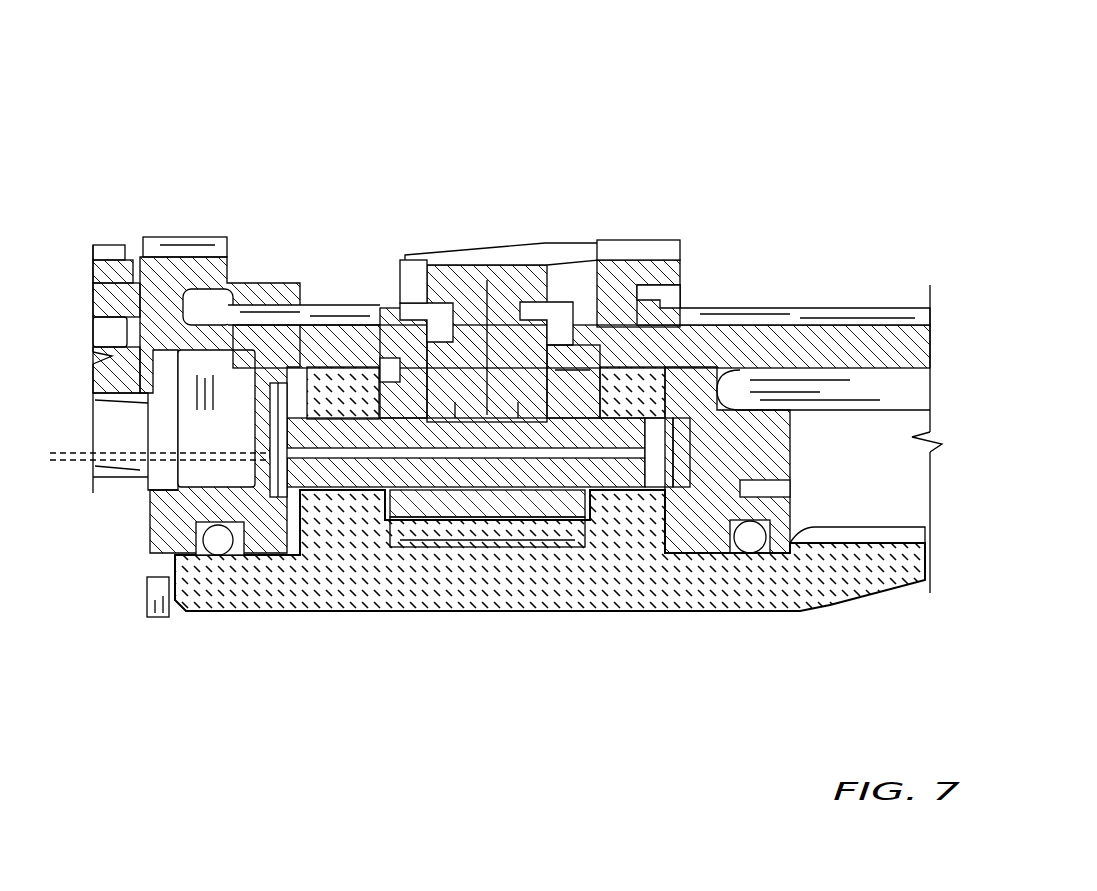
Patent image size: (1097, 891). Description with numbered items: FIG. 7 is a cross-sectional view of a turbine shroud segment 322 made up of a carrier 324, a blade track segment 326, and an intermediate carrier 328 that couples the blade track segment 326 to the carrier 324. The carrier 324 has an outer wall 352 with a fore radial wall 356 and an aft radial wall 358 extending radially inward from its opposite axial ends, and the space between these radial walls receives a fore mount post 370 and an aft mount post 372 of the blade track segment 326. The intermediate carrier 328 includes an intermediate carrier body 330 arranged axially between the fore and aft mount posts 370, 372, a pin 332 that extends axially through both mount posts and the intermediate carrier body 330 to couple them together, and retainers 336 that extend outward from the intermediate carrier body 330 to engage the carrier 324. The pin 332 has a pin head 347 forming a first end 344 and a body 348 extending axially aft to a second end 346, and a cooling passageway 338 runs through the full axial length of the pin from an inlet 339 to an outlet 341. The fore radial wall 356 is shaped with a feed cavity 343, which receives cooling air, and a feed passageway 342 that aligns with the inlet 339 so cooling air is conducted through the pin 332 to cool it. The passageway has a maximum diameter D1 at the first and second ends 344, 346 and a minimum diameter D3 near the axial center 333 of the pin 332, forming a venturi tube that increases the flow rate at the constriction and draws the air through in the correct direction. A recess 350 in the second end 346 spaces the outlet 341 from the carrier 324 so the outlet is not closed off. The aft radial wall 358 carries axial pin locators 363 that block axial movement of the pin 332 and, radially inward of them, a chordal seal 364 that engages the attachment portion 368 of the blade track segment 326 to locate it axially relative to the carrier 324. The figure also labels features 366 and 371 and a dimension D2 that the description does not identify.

The turbine shroud segment 322 is at (232, 102).
The carrier 324 is at (170, 180).
The blade track segment 326 is at (390, 754).
The intermediate carrier 328 is at (365, 141).
The intermediate carrier body 330 is at (588, 376).
The pin 332 is at (411, 414).
The axial center 333 is at (462, 412).
The retainers 336 is at (504, 238).
The cooling passageway 338 is at (397, 512).
The inlet 339 is at (235, 520).
The outlet 341 is at (665, 455).
The feed passageway 342 is at (262, 460).
The feed cavity 343 is at (235, 437).
The first end 344 is at (285, 430).
The second end 346 is at (690, 487).
The pin head 347 is at (319, 397).
The body 348 is at (414, 406).
The recess 350 is at (661, 403).
The outer wall 352 is at (245, 314).
The fore radial wall 356 is at (120, 357).
The aft radial wall 358 is at (724, 400).
The axial pin locators 363 is at (682, 420).
The chordal seal 364 is at (690, 520).
The base wall 366 is at (410, 618).
The attachment portion 368 is at (546, 690).
The fore mount post 370 is at (442, 540).
The bushing bore 371 is at (493, 557).
The aft mount post 372 is at (577, 507).
The maximum diameter D1 is at (305, 505).
The diameter D2 is at (50, 410).
The minimum diameter D3 is at (477, 520).